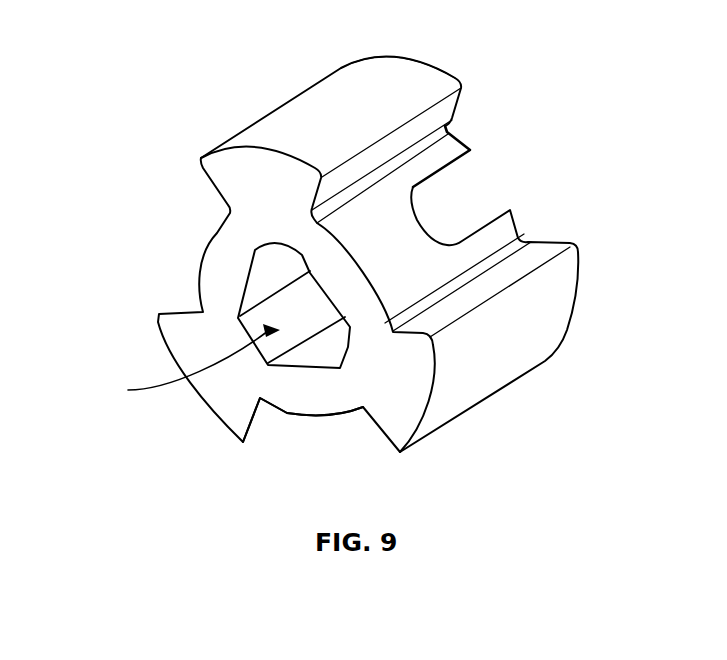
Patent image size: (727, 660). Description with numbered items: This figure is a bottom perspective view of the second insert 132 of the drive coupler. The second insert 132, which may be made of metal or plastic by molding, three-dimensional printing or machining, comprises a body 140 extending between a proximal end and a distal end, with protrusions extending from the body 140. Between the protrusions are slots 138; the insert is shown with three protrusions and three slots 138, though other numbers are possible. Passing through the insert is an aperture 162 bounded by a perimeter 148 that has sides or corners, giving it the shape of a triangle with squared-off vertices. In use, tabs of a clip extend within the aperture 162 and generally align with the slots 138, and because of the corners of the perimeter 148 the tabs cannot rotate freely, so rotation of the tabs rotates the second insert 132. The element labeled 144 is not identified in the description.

The second insert 132 is at (124, 29).
The body 144 is at (342, 95).
The slot 138 is at (447, 227).
The perimeter 148 is at (272, 317).
The aperture 162 is at (181, 365).
The body 140 is at (323, 402).